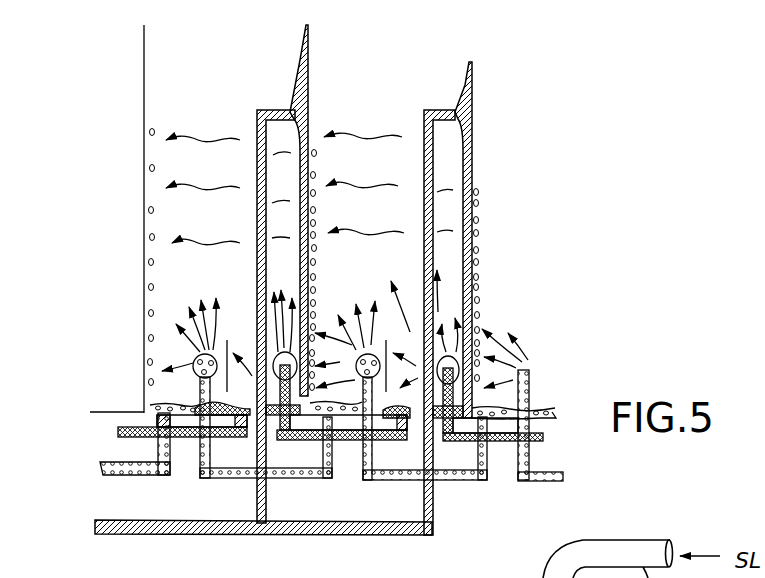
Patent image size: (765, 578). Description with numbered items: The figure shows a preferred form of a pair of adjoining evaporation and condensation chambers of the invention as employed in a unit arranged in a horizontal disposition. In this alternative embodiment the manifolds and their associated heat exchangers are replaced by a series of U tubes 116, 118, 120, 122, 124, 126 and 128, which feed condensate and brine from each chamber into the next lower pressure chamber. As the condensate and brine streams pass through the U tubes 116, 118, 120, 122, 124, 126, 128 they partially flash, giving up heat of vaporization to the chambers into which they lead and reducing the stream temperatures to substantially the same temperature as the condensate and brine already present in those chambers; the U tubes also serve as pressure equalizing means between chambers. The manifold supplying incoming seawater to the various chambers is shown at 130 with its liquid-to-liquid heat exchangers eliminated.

The U tube 116 is at (538, 478).
The U tube 118 is at (492, 442).
The U tube 120 is at (452, 478).
The U tube 122 is at (377, 440).
The U tube 124 is at (300, 478).
The U tube 126 is at (218, 440).
The U tube 128 is at (148, 475).
The seawater supply manifold without liquid-to-liquid heat exchangers 130 is at (343, 537).